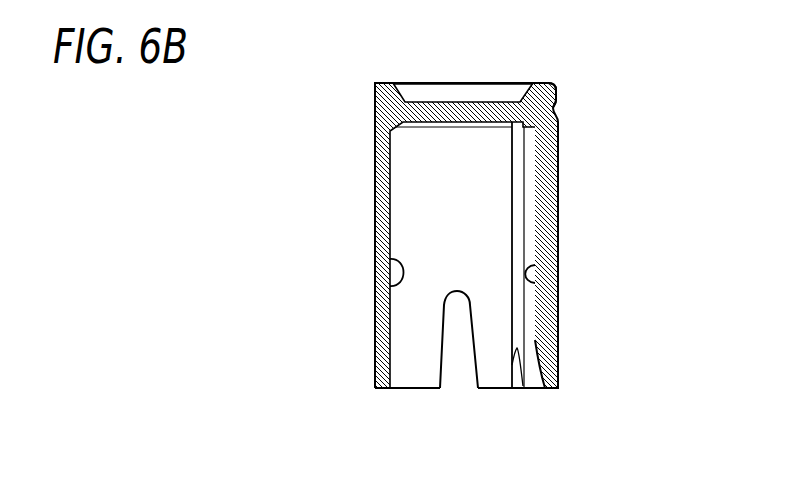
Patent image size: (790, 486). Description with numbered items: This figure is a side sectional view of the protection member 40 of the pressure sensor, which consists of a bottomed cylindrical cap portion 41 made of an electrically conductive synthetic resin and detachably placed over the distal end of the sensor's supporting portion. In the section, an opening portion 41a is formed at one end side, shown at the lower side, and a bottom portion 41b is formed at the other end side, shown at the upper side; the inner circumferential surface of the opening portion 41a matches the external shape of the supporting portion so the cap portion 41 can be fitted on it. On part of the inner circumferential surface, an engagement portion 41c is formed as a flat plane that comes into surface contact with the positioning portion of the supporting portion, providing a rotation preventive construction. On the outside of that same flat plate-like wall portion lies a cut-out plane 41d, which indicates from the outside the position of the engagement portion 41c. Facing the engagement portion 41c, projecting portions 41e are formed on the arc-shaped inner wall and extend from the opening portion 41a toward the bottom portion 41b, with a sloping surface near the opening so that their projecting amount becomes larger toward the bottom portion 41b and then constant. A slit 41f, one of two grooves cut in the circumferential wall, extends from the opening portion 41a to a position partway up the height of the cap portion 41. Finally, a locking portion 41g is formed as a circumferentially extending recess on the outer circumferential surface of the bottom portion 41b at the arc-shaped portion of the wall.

The protection member 40 is at (330, 108).
The cap portion 41 is at (562, 213).
The opening portion 41a is at (400, 389).
The bottom portion 41b is at (488, 83).
The engagement portion 41c is at (381, 287).
The cut-out plane 41d is at (375, 237).
The projecting portion 41e is at (516, 286).
The slit 41f is at (442, 358).
The locking portion 41g is at (559, 107).